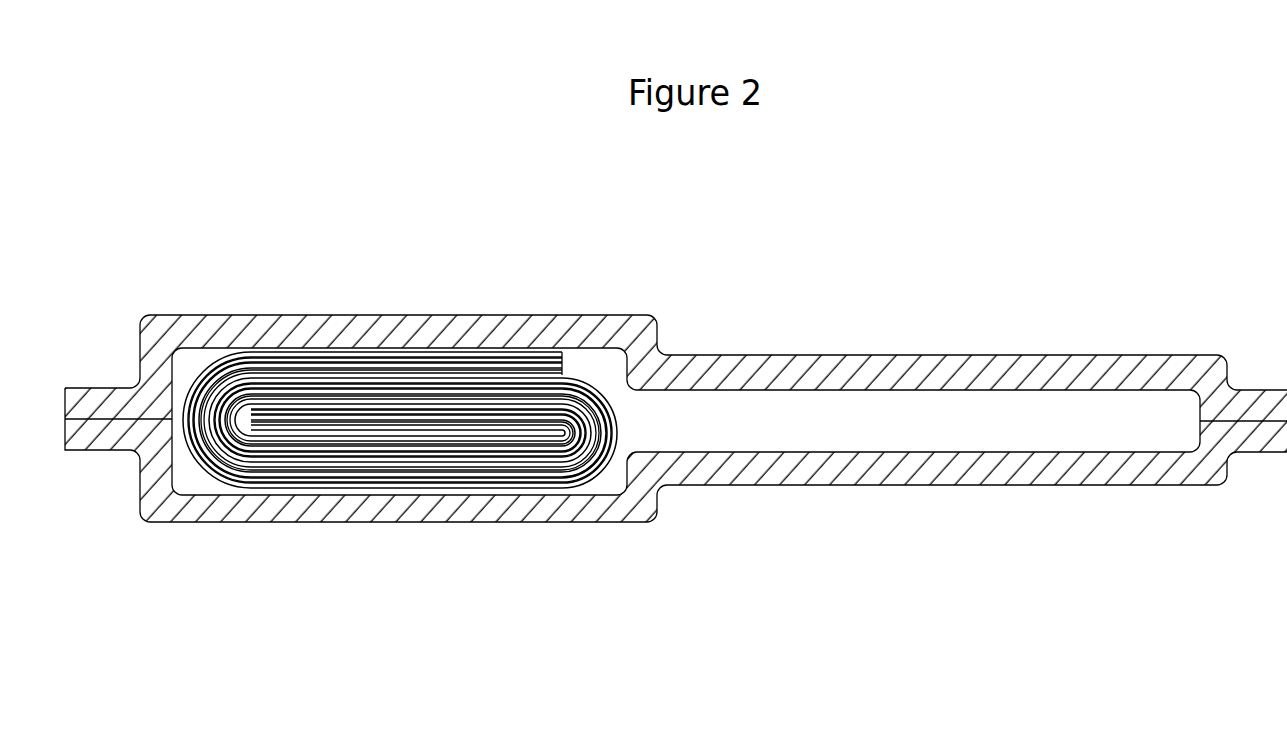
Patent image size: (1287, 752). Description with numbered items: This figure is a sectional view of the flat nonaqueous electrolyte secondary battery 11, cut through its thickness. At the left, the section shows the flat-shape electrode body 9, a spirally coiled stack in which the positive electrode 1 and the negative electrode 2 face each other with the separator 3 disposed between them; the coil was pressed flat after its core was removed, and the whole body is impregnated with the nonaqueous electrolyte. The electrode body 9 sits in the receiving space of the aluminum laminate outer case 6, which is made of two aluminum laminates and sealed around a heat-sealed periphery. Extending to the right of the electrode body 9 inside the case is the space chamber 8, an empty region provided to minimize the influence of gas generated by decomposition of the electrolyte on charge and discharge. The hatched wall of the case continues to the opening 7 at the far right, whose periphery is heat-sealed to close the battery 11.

The positive electrode 1 is at (567, 367).
The negative electrode 2 is at (566, 352).
The separator 3 is at (498, 350).
The aluminum laminate outer case 6 is at (984, 365).
The opening 7 is at (1250, 398).
The space chamber 8 is at (831, 418).
The flat-shape electrode body 9 is at (525, 237).
The nonaqueous electrolyte secondary battery 11 is at (1226, 179).